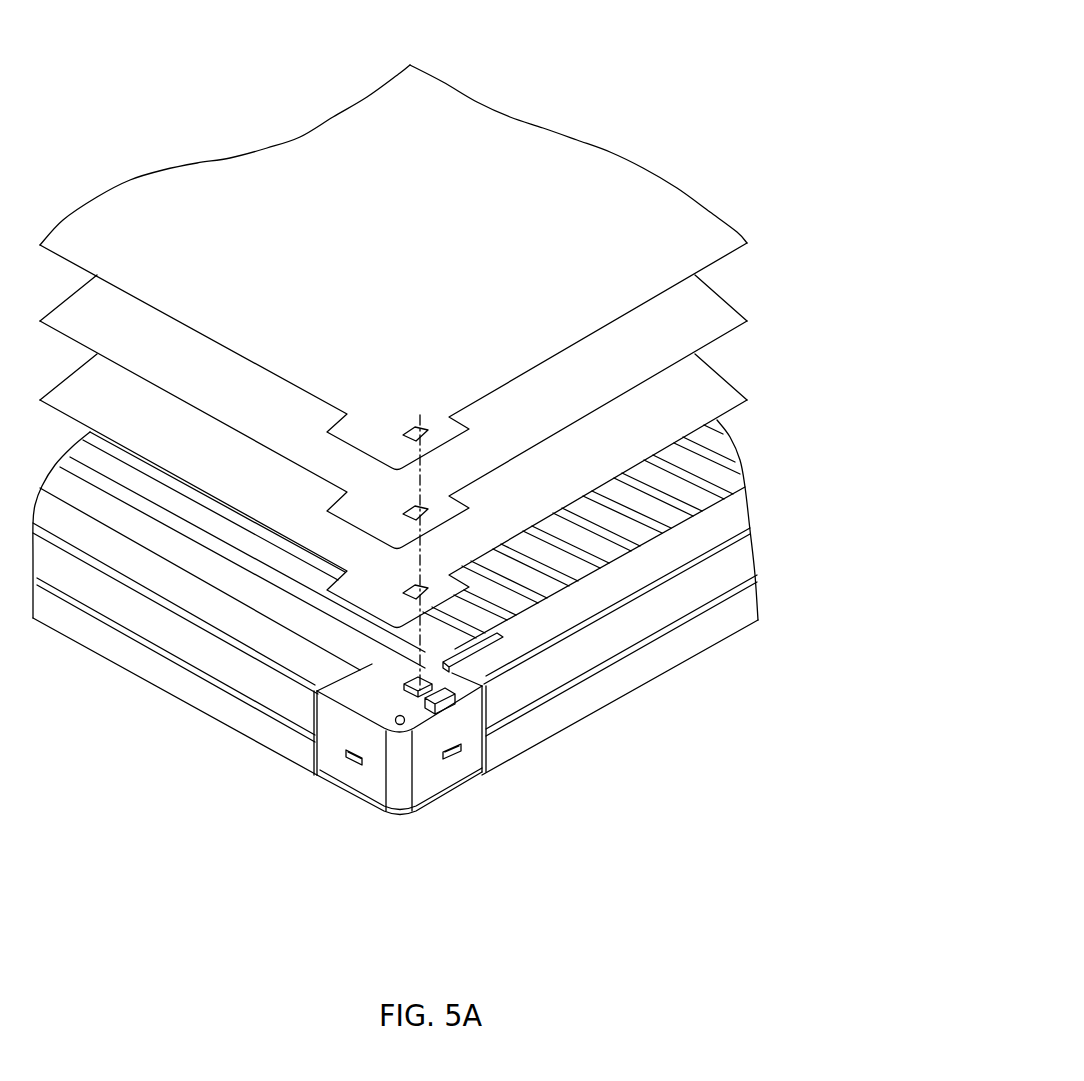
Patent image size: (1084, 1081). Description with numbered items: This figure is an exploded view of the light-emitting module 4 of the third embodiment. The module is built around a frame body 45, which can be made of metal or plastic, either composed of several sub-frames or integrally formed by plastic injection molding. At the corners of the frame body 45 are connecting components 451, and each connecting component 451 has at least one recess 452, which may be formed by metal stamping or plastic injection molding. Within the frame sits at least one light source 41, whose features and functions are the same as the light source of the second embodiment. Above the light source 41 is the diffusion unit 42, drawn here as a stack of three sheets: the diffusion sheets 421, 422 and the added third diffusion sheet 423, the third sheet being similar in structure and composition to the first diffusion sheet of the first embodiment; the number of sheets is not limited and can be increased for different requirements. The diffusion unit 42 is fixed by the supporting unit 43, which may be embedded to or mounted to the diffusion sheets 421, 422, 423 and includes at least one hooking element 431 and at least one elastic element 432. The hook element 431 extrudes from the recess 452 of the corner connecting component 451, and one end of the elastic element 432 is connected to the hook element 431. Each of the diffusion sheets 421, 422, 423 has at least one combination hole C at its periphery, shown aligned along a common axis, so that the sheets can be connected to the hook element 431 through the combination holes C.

The light-emitting module 4 is at (80, 59).
The light source 41 is at (703, 478).
The diffusion unit 42 is at (801, 384).
The diffusion sheet 421 is at (710, 382).
The diffusion sheet 422 is at (702, 302).
The third diffusion sheet 423 is at (697, 240).
The supporting unit 43 is at (733, 10).
The hooking element 431 is at (457, 670).
The elastic element 432 is at (415, 686).
The frame body 45 is at (597, 693).
The connecting component 451 is at (372, 784).
The recess 452 is at (455, 712).
The combination hole C is at (410, 427).